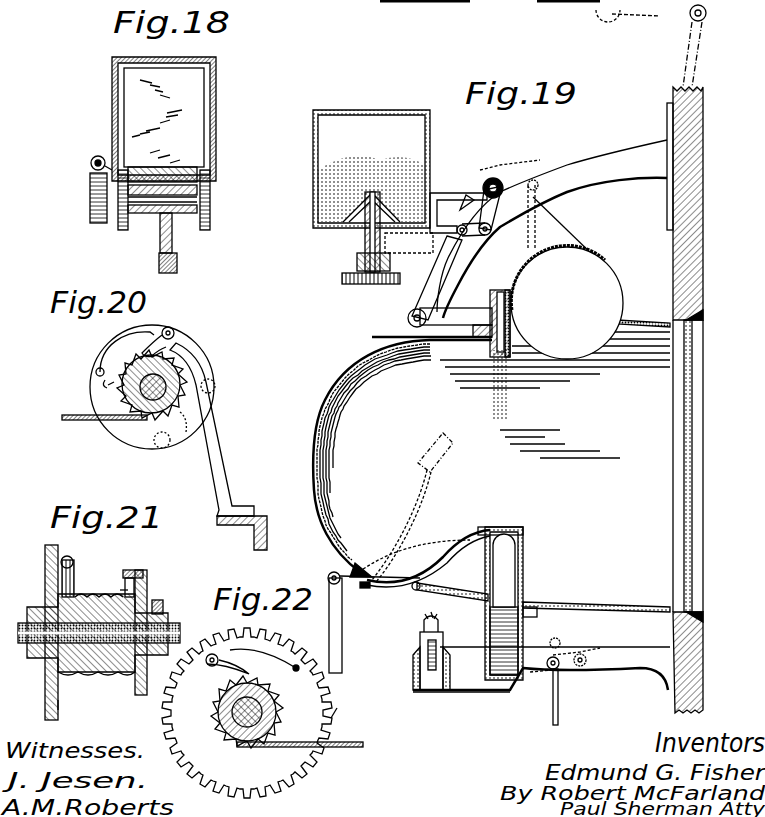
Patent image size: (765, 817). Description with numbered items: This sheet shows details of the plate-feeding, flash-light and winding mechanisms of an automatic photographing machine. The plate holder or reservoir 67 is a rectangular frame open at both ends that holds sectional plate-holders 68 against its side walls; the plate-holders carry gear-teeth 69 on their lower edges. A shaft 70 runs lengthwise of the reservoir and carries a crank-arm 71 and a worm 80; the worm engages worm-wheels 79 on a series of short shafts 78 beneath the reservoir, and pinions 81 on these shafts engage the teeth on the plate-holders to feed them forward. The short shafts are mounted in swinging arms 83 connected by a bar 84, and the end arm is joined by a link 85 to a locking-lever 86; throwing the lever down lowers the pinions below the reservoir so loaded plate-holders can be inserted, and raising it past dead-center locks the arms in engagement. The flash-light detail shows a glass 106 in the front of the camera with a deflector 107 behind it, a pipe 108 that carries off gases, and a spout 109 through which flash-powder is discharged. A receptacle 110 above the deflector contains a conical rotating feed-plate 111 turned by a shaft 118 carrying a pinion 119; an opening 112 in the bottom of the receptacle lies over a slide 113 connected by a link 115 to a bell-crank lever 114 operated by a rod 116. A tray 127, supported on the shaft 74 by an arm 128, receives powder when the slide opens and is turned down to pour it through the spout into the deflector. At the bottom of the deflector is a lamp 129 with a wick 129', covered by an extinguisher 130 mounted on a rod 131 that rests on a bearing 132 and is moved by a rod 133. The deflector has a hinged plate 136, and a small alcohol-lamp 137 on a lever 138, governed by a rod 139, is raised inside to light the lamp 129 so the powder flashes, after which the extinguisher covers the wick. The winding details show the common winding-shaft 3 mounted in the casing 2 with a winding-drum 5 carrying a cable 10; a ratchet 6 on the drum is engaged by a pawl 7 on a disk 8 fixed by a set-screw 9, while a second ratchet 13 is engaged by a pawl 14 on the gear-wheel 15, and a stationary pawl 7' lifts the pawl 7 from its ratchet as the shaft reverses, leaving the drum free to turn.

In FIG. 18, the plate holder or reservoir 67 is at (216, 60).
In FIG. 18, the sectional plate-holders 68 is at (124, 92).
In FIG. 18, the gear-teeth 69 is at (122, 167).
In FIG. 18, the short shafts 78 is at (197, 199).
In FIG. 18, the worm 80 is at (91, 163).
In FIG. 18, the shaft 70 is at (93, 168).
In FIG. 18, the worm-wheels 79 is at (95, 223).
In FIG. 18, the pinions 81 is at (123, 230).
In FIG. 18, the swinging arms 83 is at (172, 238).
In FIG. 18, the bar 84 is at (177, 268).
In FIG. 19, the bar 84 is at (450, 2).
In FIG. 19, the link 85 is at (660, 12).
In FIG. 19, the locking-lever 86 is at (700, 47).
In FIG. 20, the disk 8 is at (214, 362).
In FIG. 20, the winding-shaft 3 is at (125, 395).
In FIG. 21, the winding-shaft 3 is at (180, 628).
In FIG. 22, the winding-shaft 3 is at (278, 700).
In FIG. 20, the winding-drums 5 is at (140, 410).
In FIG. 22, the winding-drums 5 is at (262, 712).
In FIG. 20, the ratchet 6 is at (104, 388).
In FIG. 21, the ratchet 6 is at (125, 672).
In FIG. 20, the pawl 7 is at (144, 383).
In FIG. 21, the pawl 7 is at (133, 568).
In FIG. 21, the stationary pawl 7' is at (115, 589).
In FIG. 20, the cable 10 is at (82, 421).
In FIG. 21, the cable 10 is at (85, 594).
In FIG. 22, the cable 10 is at (295, 748).
In FIG. 20, the crank-arm 71 is at (218, 442).
In FIG. 20, the casing 2 is at (267, 520).
In FIG. 19, the casing 2 is at (703, 165).
In FIG. 21, the gear-wheel 15 is at (45, 560).
In FIG. 22, the gear-wheel 15 is at (344, 704).
In FIG. 21, the pawl 14 is at (74, 565).
In FIG. 22, the pawl 14 is at (212, 675).
In FIG. 21, the set-screw 9 is at (163, 605).
In FIG. 21, the ratchet 13 is at (62, 700).
In FIG. 22, the ratchet 13 is at (205, 715).
In FIG. 19, the glass 106 is at (692, 480).
In FIG. 19, the deflector 107 is at (319, 470).
In FIG. 19, the pipe 108 is at (585, 233).
In FIG. 19, the spout 109 is at (511, 312).
In FIG. 19, the receptacle 110 is at (430, 145).
In FIG. 19, the conical rotating feed-plate 111 is at (385, 200).
In FIG. 19, the opening 112 is at (430, 213).
In FIG. 19, the slide 113 is at (474, 222).
In FIG. 19, the bell-crank lever 114 is at (503, 193).
In FIG. 19, the link 115 is at (480, 244).
In FIG. 19, the rod 116 is at (541, 223).
In FIG. 19, the shaft 118 is at (365, 240).
In FIG. 19, the pinion 119 is at (365, 284).
In FIG. 19, the tray 127 is at (445, 270).
In FIG. 19, the arm 128 is at (458, 318).
In FIG. 19, the shaft 74 is at (408, 320).
In FIG. 19, the lamp 129 is at (596, 594).
In FIG. 19, the wick 129' is at (531, 567).
In FIG. 19, the extinguisher 130 is at (500, 530).
In FIG. 19, the rod 131 is at (430, 560).
In FIG. 19, the bearing 132 is at (368, 590).
In FIG. 19, the rod 133 is at (342, 640).
In FIG. 19, the hinged plate 136 is at (430, 592).
In FIG. 19, the small alcohol-lamp 137 is at (448, 651).
In FIG. 19, the lever 138 is at (490, 690).
In FIG. 19, the rod 139 is at (558, 700).